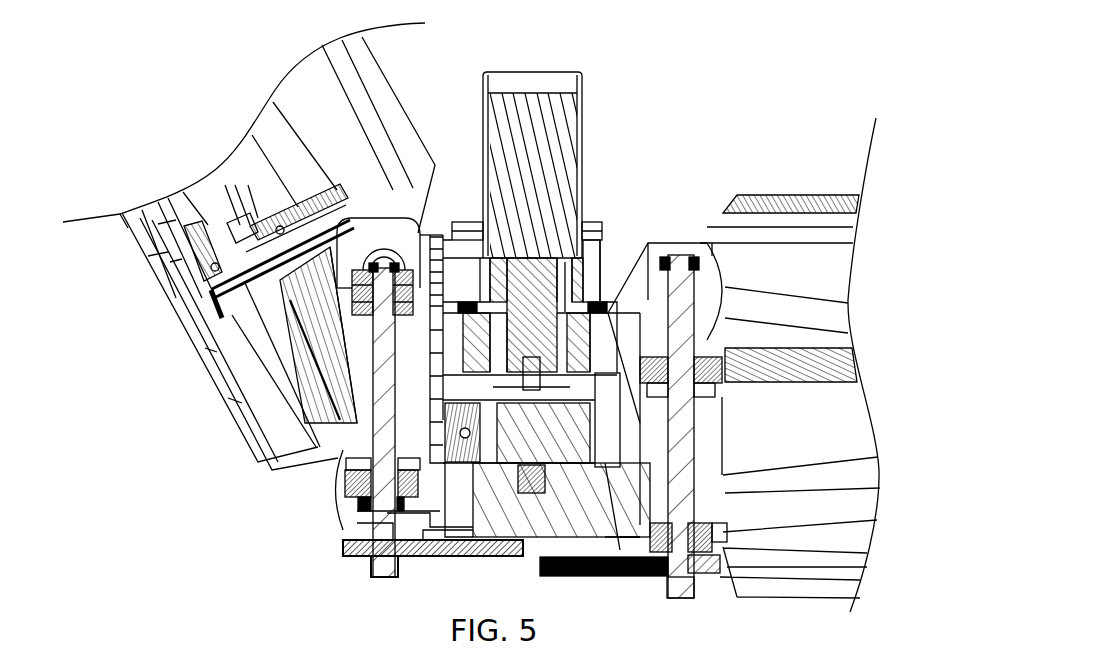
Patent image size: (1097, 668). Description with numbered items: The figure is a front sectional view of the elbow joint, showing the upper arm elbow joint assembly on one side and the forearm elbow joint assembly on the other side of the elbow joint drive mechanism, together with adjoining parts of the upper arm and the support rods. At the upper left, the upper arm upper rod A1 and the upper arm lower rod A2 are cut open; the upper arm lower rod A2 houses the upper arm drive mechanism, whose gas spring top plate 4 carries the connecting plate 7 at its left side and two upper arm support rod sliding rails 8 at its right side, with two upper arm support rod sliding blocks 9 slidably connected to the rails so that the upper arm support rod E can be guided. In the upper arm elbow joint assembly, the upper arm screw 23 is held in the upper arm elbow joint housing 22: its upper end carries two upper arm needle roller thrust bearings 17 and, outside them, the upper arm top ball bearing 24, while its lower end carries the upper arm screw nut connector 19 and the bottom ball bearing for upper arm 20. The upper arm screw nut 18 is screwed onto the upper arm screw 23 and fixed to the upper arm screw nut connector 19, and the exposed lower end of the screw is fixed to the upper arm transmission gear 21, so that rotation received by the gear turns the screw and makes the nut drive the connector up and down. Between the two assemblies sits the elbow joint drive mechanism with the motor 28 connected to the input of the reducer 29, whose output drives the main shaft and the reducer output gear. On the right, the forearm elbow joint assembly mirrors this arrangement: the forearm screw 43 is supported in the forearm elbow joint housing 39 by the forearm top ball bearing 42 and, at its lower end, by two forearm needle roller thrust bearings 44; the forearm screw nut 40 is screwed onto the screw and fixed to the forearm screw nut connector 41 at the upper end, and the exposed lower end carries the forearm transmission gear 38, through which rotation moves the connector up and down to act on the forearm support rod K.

The upper arm upper rod A1 is at (335, 77).
The upper arm lower rod A2 is at (130, 226).
The gas spring top plate 4 is at (240, 272).
The connecting plate 7 is at (190, 260).
The upper arm support rod sliding rails 8 is at (318, 218).
The upper arm support rod sliding blocks 9 is at (262, 301).
The upper arm support rod E is at (293, 355).
The upper arm needle roller thrust bearings 17 is at (427, 312).
The upper arm screw nut 18 is at (350, 466).
The upper arm screw nut connector 19 is at (353, 490).
The bottom ball bearing for upper arm 20 is at (353, 507).
The upper arm transmission gear 21 is at (343, 545).
The upper arm elbow joint housing 22 is at (396, 235).
The upper arm screw 23 is at (380, 565).
The upper arm top ball bearing 24 is at (420, 283).
The motor 28 is at (555, 137).
The reducer 29 is at (430, 270).
The forearm transmission gear 38 is at (720, 573).
The forearm elbow joint housing 39 is at (645, 275).
The forearm screw nut 40 is at (777, 352).
The forearm screw nut connector 41 is at (743, 352).
The forearm top ball bearing 42 is at (858, 198).
The forearm screw 43 is at (687, 449).
The forearm needle roller thrust bearings 44 is at (710, 543).
The forearm support rod K is at (833, 352).